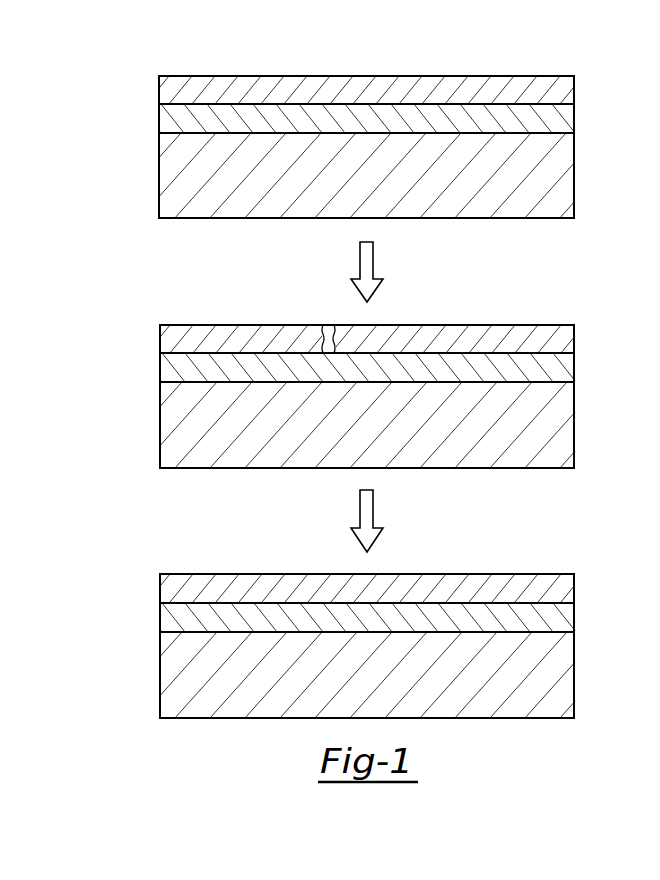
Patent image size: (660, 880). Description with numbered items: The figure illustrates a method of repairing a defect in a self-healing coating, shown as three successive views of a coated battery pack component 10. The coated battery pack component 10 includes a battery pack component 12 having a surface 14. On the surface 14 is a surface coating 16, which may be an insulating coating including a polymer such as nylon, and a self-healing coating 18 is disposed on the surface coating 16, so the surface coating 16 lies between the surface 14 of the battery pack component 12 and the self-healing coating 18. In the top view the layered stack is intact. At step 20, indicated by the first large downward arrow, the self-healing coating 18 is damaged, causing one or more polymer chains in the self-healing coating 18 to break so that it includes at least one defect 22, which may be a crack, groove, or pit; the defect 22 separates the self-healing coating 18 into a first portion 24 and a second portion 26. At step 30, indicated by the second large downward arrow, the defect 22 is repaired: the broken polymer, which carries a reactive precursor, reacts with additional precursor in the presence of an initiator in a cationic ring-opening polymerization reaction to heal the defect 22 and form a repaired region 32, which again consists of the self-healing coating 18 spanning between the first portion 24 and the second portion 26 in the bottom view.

The coated battery pack component 10 is at (171, 35).
The battery pack component 12 is at (162, 163).
The surface 14 is at (540, 133).
The surface coating 16 is at (170, 118).
The self-healing coating 18 is at (170, 92).
The step 20 is at (374, 262).
The defect 22 is at (329, 324).
The first portion 24 is at (168, 312).
The second portion 26 is at (556, 313).
The step 30 is at (374, 512).
The repaired region 32 is at (323, 562).